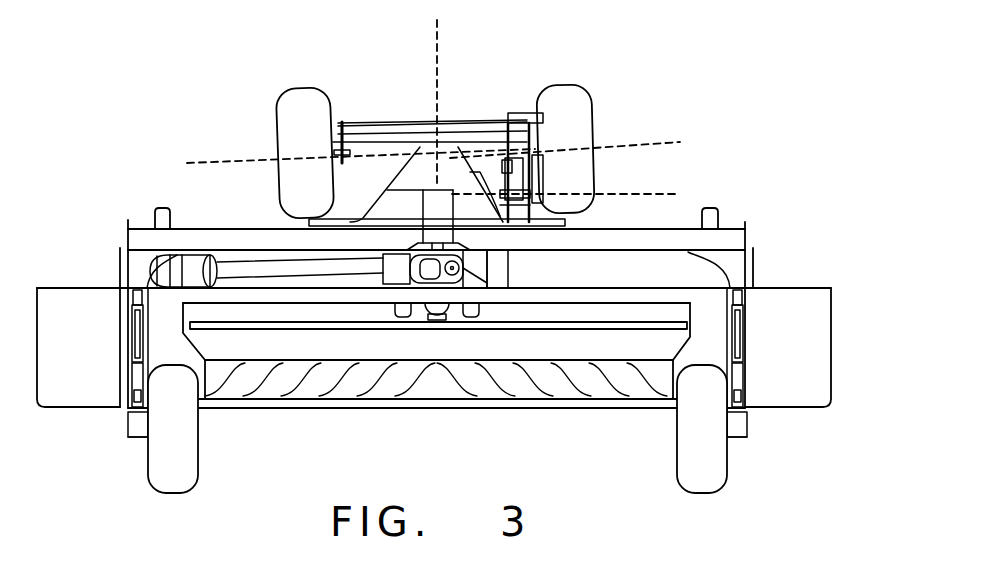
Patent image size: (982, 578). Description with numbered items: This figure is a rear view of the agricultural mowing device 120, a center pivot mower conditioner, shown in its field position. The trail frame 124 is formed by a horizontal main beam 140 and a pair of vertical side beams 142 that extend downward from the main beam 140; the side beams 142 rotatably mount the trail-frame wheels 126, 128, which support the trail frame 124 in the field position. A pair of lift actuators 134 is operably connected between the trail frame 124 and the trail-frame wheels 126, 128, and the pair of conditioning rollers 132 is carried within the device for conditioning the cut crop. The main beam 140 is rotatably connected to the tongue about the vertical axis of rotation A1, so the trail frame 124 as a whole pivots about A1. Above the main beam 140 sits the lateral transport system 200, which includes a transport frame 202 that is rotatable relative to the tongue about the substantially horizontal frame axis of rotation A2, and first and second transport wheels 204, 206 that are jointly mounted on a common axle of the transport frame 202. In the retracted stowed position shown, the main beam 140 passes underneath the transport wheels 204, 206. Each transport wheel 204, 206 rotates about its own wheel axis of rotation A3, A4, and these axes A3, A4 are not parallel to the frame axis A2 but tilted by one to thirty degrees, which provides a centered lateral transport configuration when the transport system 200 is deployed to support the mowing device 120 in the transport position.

The agricultural mowing device 120 is at (848, 287).
The trail frame 124 is at (145, 232).
The trail-frame wheel 126 is at (173, 490).
The trail-frame wheel 128 is at (707, 492).
The conditioning rollers 132 is at (285, 388).
The lift actuators 134 is at (133, 340).
The horizontal main beam 140 is at (240, 232).
The vertical side beams 142 is at (130, 270).
The lateral transport system 200 is at (434, 113).
The transport frame 202 is at (393, 131).
The first transport wheel 204 is at (297, 92).
The second transport wheel 206 is at (573, 87).
The axis of rotation A1 is at (441, 46).
The frame axis of rotation A2 is at (653, 194).
The wheel axis of rotation A3 is at (240, 157).
The wheel axis of rotation A4 is at (645, 143).